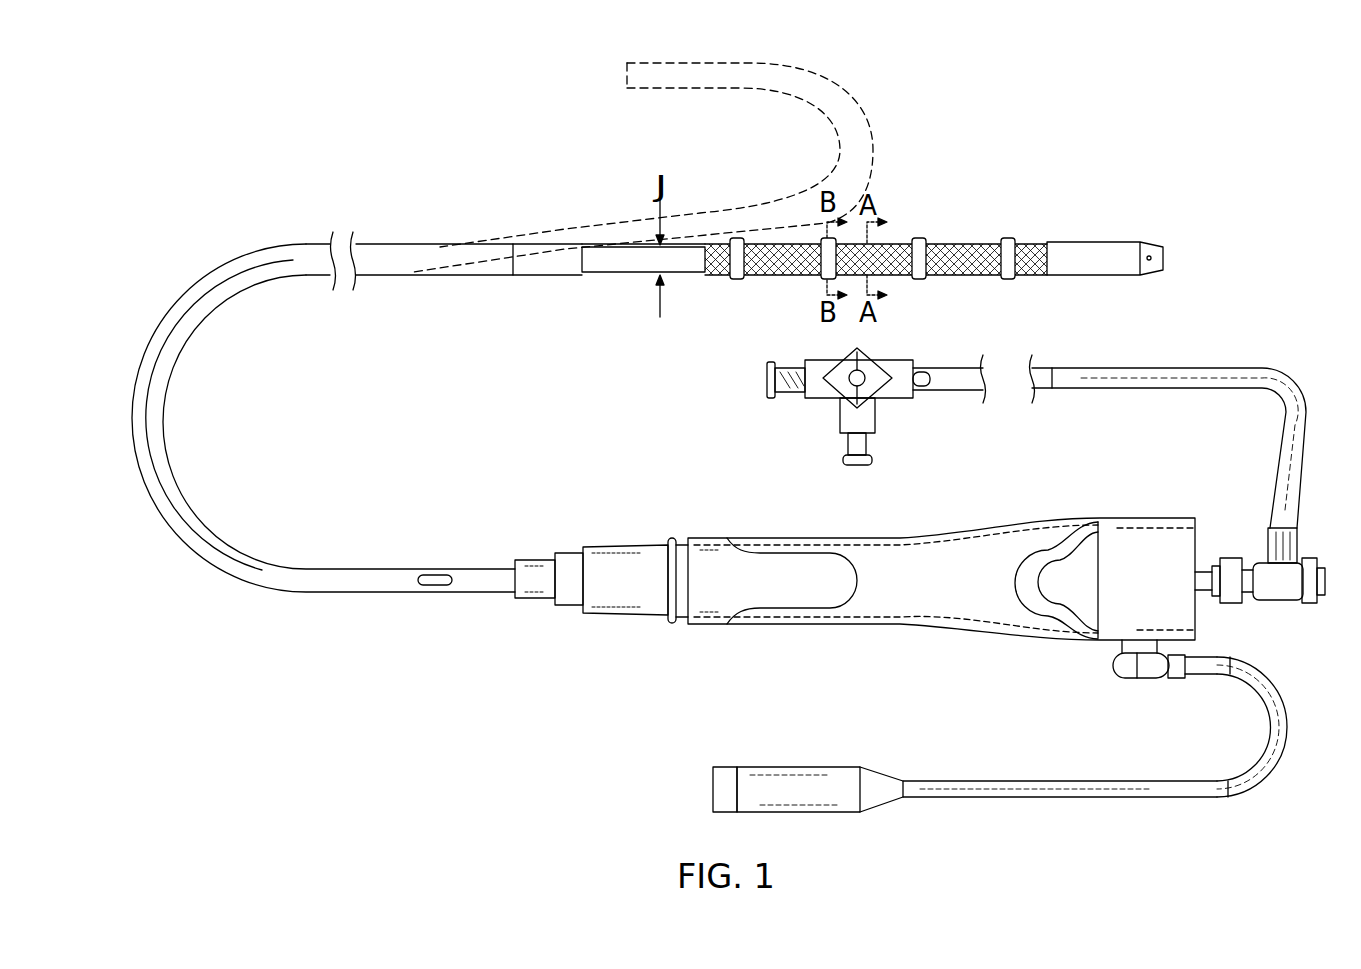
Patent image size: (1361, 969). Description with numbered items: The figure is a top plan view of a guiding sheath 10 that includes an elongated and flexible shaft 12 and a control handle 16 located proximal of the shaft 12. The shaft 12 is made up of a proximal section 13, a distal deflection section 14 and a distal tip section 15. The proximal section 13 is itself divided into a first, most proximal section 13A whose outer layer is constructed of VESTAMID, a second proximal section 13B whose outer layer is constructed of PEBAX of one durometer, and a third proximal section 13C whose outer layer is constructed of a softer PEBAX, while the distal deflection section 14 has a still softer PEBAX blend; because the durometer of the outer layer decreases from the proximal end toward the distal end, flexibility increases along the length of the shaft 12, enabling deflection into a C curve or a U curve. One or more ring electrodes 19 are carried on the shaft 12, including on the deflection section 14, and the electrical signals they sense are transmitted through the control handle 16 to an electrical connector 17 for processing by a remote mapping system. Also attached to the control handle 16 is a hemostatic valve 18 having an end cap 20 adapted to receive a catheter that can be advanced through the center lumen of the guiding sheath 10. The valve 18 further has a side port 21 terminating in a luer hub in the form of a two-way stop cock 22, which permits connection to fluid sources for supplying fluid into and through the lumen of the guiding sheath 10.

The guiding sheath 10 is at (508, 488).
The shaft 12 is at (304, 209).
The proximal section 13 is at (283, 568).
The first proximal section 13A is at (437, 277).
The second proximal section 13B is at (538, 276).
The third proximal section 13C is at (613, 274).
The distal deflection section 14 is at (887, 243).
The distal tip section 15 is at (1090, 242).
The control handle 16 is at (897, 537).
The electrical connector 17 is at (805, 767).
The hemostatic valve 18 is at (1277, 601).
The ring electrodes 19 is at (920, 240).
The end cap 20 is at (1312, 558).
The side port 21 is at (1268, 548).
The two-way stop cock 22 is at (878, 429).